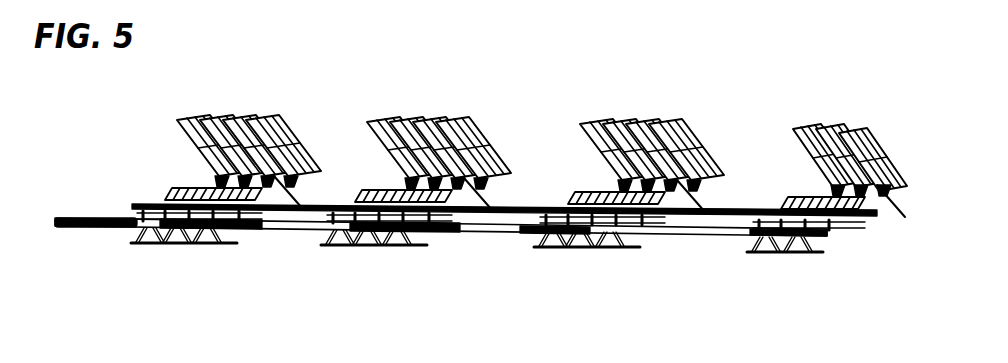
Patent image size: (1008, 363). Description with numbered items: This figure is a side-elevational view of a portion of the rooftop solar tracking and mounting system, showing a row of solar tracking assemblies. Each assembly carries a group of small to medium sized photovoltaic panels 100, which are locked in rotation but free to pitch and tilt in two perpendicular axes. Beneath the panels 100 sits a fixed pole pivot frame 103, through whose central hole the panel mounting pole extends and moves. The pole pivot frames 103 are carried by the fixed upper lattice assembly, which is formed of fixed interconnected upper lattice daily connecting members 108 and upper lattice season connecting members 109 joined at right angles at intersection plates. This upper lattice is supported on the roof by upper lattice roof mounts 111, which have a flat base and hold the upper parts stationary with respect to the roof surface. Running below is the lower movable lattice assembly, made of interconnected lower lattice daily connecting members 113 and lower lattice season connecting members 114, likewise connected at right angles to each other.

The photovoltaic panels 100 is at (453, 127).
The pole pivot frame 103 is at (362, 185).
The upper lattice daily connecting members 108 is at (504, 114).
The upper lattice season connecting members 109 is at (520, 198).
The upper lattice roof mounts 111 is at (603, 242).
The lower lattice daily connecting members 113 is at (441, 276).
The lower lattice season connecting members 114 is at (503, 236).